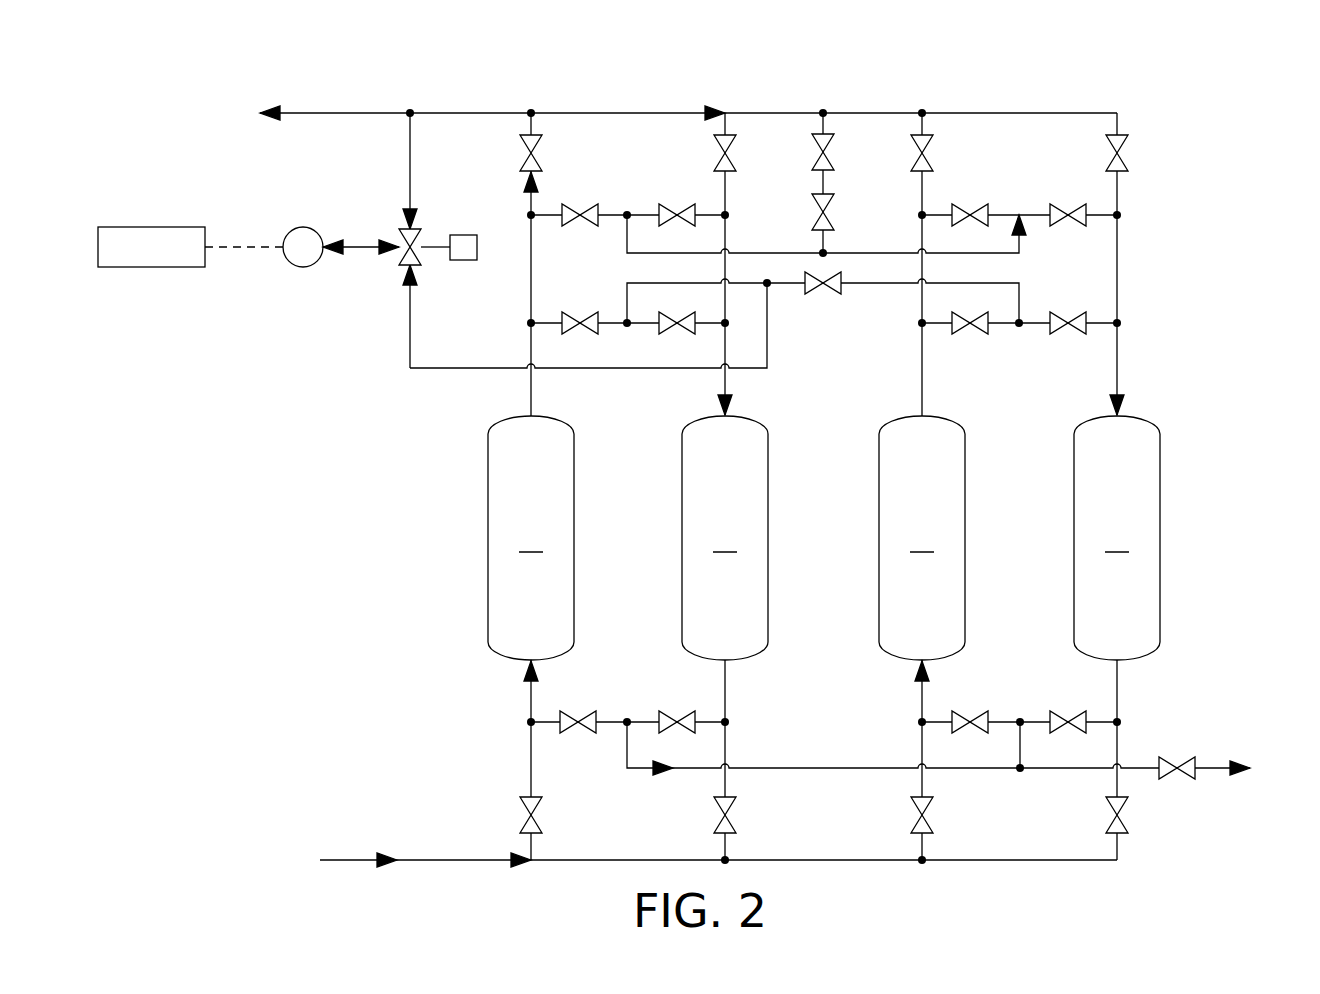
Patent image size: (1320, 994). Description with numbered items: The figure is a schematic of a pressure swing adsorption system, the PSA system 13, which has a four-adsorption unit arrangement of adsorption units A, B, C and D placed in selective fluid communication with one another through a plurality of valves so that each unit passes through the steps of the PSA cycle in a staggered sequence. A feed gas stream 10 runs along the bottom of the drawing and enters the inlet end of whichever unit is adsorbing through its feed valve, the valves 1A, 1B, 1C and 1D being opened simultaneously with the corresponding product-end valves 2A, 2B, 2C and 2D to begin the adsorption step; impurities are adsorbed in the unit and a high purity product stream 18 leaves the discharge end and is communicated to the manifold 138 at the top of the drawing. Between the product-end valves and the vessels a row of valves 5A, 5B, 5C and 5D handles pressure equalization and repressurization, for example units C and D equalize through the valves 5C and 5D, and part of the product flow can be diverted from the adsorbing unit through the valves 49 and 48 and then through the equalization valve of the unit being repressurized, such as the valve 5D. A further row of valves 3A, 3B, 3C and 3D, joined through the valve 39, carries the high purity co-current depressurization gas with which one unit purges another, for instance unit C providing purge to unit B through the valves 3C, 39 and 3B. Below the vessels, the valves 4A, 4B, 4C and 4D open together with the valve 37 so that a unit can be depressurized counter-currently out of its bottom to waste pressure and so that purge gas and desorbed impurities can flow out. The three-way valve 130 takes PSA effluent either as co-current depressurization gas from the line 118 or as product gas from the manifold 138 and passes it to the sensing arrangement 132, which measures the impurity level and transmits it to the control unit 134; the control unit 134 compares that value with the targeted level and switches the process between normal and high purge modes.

The PSA system 13 is at (1243, 93).
The manifold 138 is at (347, 111).
The control unit 134 is at (153, 226).
The sensing arrangement 132 is at (303, 226).
The 3-way valve 130 is at (414, 228).
The high purity product stream 18 is at (527, 347).
The valve 2A is at (520, 137).
The valve 2B is at (714, 137).
The valve 2C is at (911, 137).
The valve 2D is at (1128, 139).
The valve 49 is at (812, 137).
The valve 48 is at (812, 197).
The valve 5A is at (596, 207).
The valve 5B is at (668, 207).
The valve 5C is at (983, 206).
The valve 5D is at (1063, 206).
The valve 3A is at (572, 316).
The valve 3B is at (664, 315).
The valve 3C is at (982, 333).
The valve 3D is at (1063, 314).
The line 118 is at (797, 288).
The valve 39 is at (837, 294).
The valve 4A is at (591, 712).
The valve 4B is at (687, 712).
The valve 4C is at (983, 712).
The valve 4D is at (1077, 712).
The valve 37 is at (1190, 762).
The valve 1A is at (539, 818).
The valve 1B is at (733, 818).
The valve 1C is at (930, 818).
The valve 1D is at (1125, 818).
The feed gas stream 10 is at (450, 857).